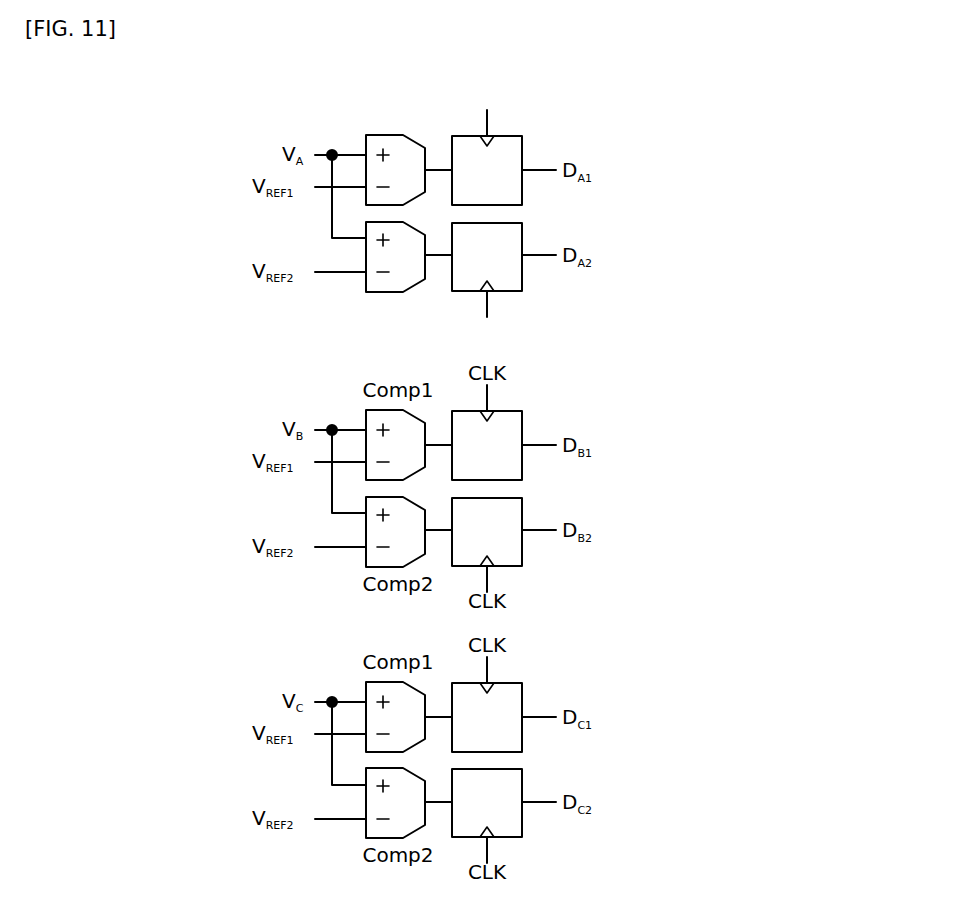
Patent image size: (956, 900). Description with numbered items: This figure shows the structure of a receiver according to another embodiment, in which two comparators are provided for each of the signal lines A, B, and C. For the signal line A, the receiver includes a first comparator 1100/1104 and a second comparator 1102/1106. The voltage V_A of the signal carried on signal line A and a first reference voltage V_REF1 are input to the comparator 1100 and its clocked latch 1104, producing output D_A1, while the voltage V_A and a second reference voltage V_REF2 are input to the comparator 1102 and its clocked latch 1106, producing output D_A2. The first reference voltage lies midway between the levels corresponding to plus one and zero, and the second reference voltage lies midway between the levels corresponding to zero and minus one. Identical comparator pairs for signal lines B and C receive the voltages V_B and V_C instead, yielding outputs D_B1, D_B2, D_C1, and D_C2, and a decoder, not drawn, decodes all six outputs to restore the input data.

The comparator 1100 is at (365, 148).
The comparator 1102 is at (365, 291).
The comparator 1104 is at (508, 136).
The comparator 1106 is at (522, 238).